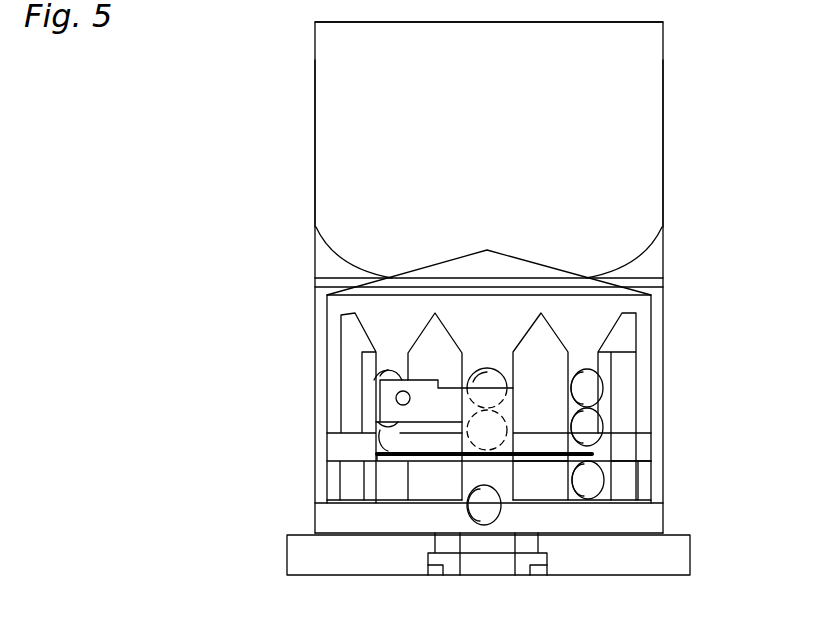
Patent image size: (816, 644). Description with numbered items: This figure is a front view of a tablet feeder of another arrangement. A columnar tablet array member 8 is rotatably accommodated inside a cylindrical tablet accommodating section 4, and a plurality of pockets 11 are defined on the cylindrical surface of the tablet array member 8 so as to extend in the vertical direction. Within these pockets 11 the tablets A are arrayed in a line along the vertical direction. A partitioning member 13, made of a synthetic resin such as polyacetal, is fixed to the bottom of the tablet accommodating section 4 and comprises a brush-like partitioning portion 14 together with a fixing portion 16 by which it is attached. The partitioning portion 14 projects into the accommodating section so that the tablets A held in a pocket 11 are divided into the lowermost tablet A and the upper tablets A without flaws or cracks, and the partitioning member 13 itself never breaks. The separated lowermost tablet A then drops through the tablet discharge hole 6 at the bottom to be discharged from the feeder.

The tablet accommodating section 4 is at (644, 85).
The tablet array member 8 is at (635, 302).
The pockets 11 is at (716, 353).
The partitioning member 13 is at (407, 441).
The partitioning portion 14 is at (440, 475).
The fixing portion 16 is at (386, 393).
The tablet discharge hole 6 is at (497, 563).
The tablets A is at (597, 435).